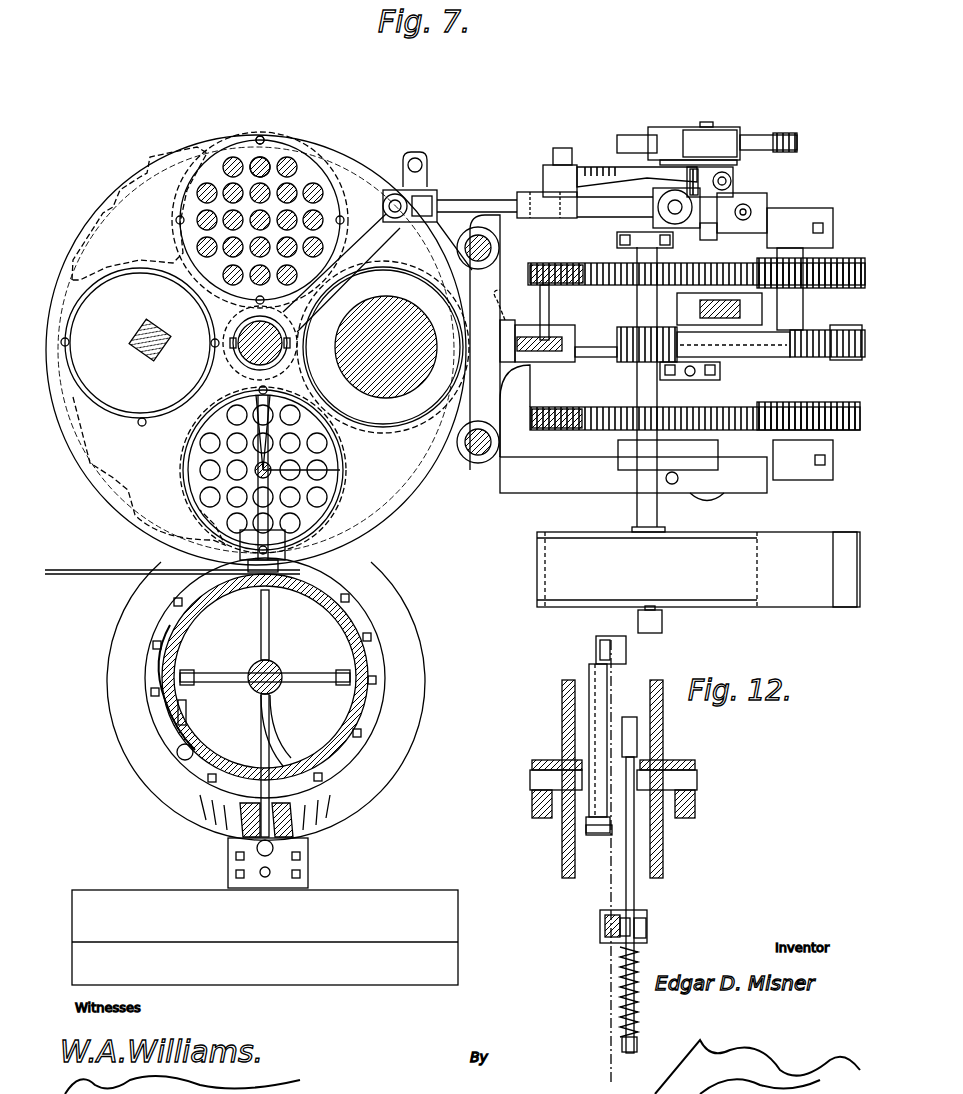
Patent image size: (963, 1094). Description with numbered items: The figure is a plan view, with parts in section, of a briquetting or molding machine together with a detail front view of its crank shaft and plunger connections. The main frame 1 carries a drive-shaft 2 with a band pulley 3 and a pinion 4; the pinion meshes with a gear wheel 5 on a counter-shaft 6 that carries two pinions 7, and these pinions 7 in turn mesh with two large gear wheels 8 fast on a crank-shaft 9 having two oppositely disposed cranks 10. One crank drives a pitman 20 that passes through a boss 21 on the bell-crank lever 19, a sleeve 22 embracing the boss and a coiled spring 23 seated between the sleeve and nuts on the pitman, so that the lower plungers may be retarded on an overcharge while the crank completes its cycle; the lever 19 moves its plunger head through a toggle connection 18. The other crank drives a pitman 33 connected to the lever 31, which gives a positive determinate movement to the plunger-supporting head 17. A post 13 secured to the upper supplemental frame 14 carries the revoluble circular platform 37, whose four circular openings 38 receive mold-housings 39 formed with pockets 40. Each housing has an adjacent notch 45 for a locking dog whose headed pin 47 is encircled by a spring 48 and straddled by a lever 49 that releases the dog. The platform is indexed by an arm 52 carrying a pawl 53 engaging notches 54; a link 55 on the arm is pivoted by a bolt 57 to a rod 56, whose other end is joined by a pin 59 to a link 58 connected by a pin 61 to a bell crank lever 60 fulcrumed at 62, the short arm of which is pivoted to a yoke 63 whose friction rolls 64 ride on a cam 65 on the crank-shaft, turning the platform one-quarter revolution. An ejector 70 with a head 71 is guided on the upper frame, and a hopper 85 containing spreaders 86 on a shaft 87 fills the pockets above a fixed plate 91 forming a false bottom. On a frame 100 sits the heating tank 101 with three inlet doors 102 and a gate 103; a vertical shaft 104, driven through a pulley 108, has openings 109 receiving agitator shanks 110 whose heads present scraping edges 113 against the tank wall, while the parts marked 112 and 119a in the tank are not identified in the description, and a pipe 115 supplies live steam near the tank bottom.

In FIG. 7, the main frame 1 is at (592, 495).
In FIG. 7, the drive-shaft 2 is at (652, 633).
In FIG. 7, the band pulley 3 is at (745, 608).
In FIG. 7, the pinion 4 is at (614, 364).
In FIG. 7, the gear wheel 5 is at (842, 335).
In FIG. 7, the counter-shaft 6 is at (803, 320).
In FIG. 7, the pinions 7 is at (820, 268).
In FIG. 7, the gear wheels 8 is at (560, 268).
In FIG. 12, the gear wheels 8 is at (562, 736).
In FIG. 7, the crank-shaft 9 is at (710, 500).
In FIG. 12, the crank-shaft 9 is at (530, 790).
In FIG. 7, the cranks 10 is at (745, 382).
In FIG. 12, the cranks 10 is at (637, 740).
In FIG. 7, the post 13 is at (243, 328).
In FIG. 7, the upper supplemental frame 14 is at (462, 470).
In FIG. 7, the plunger-supporting head 17 is at (345, 438).
In FIG. 7, the toggle connection 18 is at (572, 340).
In FIG. 12, the lever 19 is at (610, 944).
In FIG. 12, the pitman 20 is at (634, 898).
In FIG. 12, the boss 21 is at (600, 928).
In FIG. 12, the sleeve 22 is at (640, 944).
In FIG. 12, the coiled spring 23 is at (638, 1000).
In FIG. 12, the lever 31 is at (612, 652).
In FIG. 12, the pitman 33 is at (598, 720).
In FIG. 7, the circular platform 37 is at (342, 170).
In FIG. 7, the circular openings 38 is at (320, 160).
In FIG. 7, the mold-housings 39 is at (292, 160).
In FIG. 7, the pockets 40 is at (272, 155).
In FIG. 7, the notch 45 is at (261, 135).
In FIG. 7, the headed pin 47 is at (555, 352).
In FIG. 7, the spring 48 is at (510, 362).
In FIG. 7, the lever 49 is at (552, 320).
In FIG. 7, the arm 52 is at (372, 262).
In FIG. 7, the pawl 53 is at (428, 185).
In FIG. 7, the notches 54 is at (138, 185).
In FIG. 7, the link 55 is at (410, 160).
In FIG. 7, the rod 56 is at (487, 200).
In FIG. 7, the bolt 57 is at (436, 198).
In FIG. 7, the link 58 is at (748, 197).
In FIG. 7, the pin 59 is at (652, 196).
In FIG. 7, the bell crank lever 60 is at (598, 168).
In FIG. 7, the pin 61 is at (680, 245).
In FIG. 7, the fulcrum 62 is at (562, 148).
In FIG. 7, the yoke 63 is at (677, 128).
In FIG. 7, the friction rolls 64 is at (712, 135).
In FIG. 7, the cam 65 is at (640, 135).
In FIG. 7, the ejector 70 is at (170, 338).
In FIG. 7, the head 71 is at (138, 423).
In FIG. 7, the hopper 85 is at (336, 480).
In FIG. 7, the spreaders 86 is at (282, 398).
In FIG. 7, the shaft 87 is at (322, 470).
In FIG. 7, the fixed plate 91 is at (185, 440).
In FIG. 7, the frame 100 is at (372, 818).
In FIG. 7, the heating tank 101 is at (345, 633).
In FIG. 7, the inlet doors 102 is at (162, 705).
In FIG. 7, the gate 103 is at (292, 574).
In FIG. 7, the shaft 104 is at (283, 673).
In FIG. 7, the pulley 108 is at (405, 900).
In FIG. 7, the openings 109 is at (270, 628).
In FIG. 7, the shanks 110 is at (352, 668).
In FIG. 7, the bolt 112 is at (374, 682).
In FIG. 7, the scraping edge 113 is at (210, 664).
In FIG. 7, the pipe 115 is at (296, 806).
In FIG. 7, the curved spoke 119a is at (274, 740).